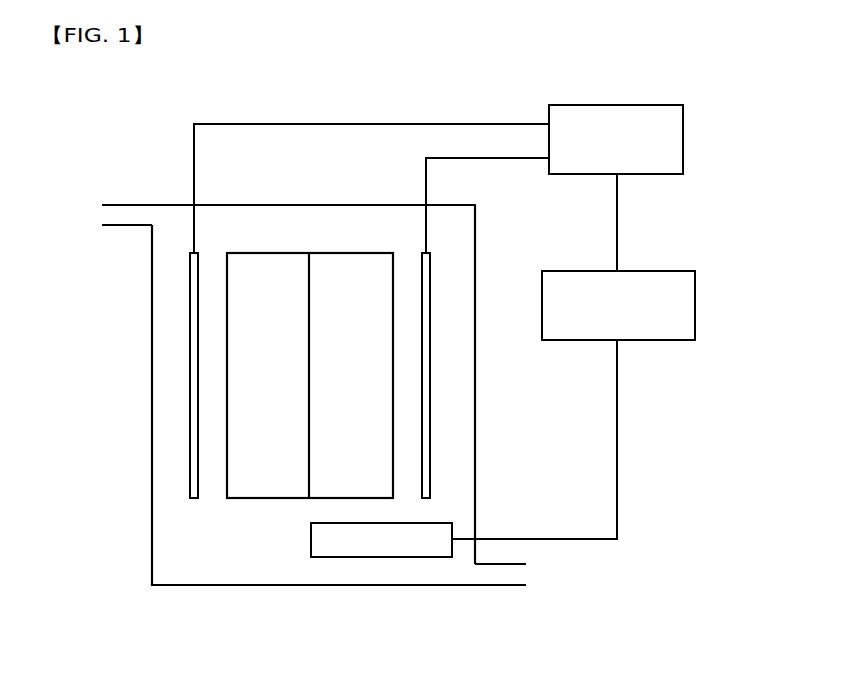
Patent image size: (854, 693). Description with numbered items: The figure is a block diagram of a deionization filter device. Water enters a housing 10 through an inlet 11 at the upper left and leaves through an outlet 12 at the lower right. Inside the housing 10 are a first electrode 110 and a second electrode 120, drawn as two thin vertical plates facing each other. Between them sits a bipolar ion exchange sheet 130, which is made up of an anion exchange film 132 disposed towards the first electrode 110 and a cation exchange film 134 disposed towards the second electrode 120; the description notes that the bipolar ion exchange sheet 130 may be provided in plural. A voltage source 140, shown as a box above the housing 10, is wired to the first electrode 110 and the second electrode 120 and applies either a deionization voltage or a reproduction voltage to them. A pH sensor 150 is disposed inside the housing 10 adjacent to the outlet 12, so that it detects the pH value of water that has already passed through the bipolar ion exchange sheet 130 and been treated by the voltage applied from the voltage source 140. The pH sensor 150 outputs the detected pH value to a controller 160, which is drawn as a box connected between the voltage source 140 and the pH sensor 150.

The housing 10 is at (152, 310).
The inlet 11 is at (120, 205).
The outlet 12 is at (508, 587).
The first electrode 110 is at (194, 385).
The second electrode 120 is at (430, 403).
The bipolar ion exchange sheet 130 is at (281, 399).
The anion exchange film 132 is at (272, 258).
The cation exchange film 134 is at (355, 258).
The voltage source 140 is at (683, 139).
The pH sensor 150 is at (394, 557).
The controller 160 is at (695, 303).